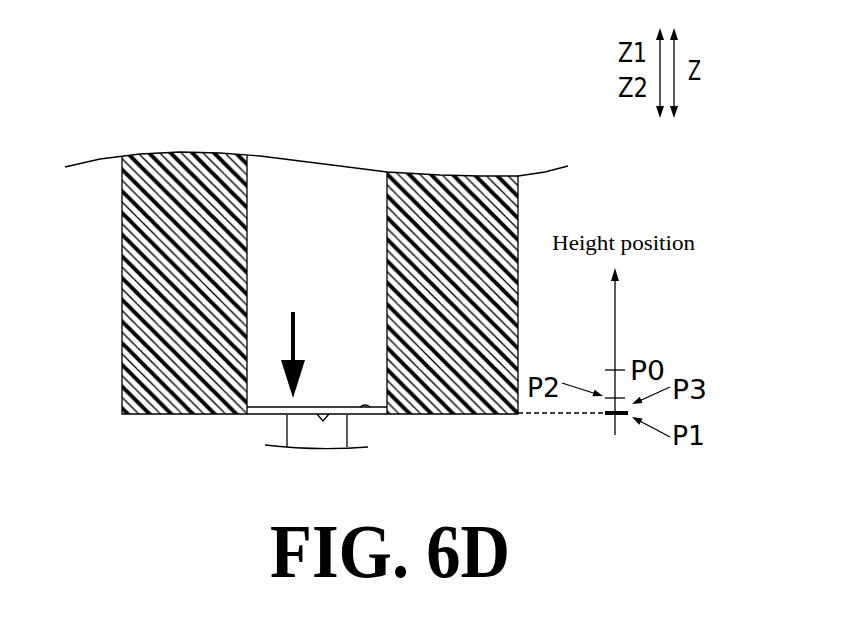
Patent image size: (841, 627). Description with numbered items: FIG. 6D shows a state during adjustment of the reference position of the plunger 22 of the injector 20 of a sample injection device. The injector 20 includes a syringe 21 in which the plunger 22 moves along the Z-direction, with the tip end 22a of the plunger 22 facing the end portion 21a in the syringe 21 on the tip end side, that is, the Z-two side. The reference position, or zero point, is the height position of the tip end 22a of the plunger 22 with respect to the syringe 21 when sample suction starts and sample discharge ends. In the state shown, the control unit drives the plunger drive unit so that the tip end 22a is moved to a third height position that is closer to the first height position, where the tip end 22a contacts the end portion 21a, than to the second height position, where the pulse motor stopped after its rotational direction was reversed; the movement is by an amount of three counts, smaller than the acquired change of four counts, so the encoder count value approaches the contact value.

The injector 20 is at (301, 261).
The syringe 21 is at (118, 280).
The plunger 22 is at (316, 172).
The tip end of the plunger 22a is at (330, 414).
The end portion in the syringe on the tip end side 21a is at (367, 410).